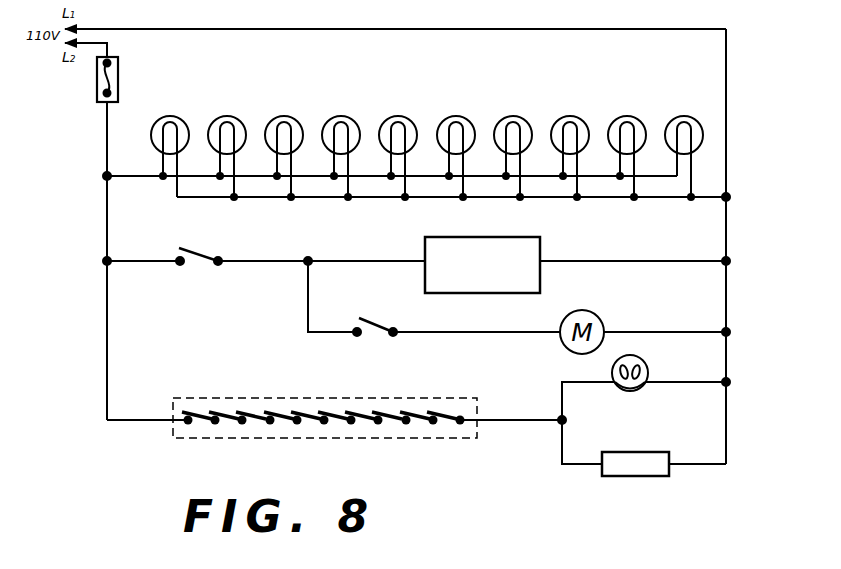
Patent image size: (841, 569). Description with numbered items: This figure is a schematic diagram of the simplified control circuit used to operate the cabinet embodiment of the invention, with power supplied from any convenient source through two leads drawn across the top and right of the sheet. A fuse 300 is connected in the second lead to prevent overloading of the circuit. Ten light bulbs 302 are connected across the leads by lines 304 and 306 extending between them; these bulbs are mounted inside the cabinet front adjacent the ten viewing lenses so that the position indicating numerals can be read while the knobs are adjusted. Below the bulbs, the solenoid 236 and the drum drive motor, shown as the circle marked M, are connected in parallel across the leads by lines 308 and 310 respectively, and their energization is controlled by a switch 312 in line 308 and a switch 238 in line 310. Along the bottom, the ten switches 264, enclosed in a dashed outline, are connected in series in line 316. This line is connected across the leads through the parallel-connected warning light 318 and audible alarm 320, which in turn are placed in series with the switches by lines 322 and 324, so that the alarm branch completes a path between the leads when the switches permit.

The fuse 300 is at (96, 88).
The light bulbs 302 is at (333, 118).
The line 304 is at (137, 177).
The line 306 is at (490, 198).
The line 308 is at (274, 264).
The line 310 is at (332, 336).
The switch 312 is at (211, 251).
The switch 238 is at (376, 317).
The solenoid 236 is at (541, 250).
The switches 264 is at (438, 416).
The line 316 is at (512, 423).
The warning light 318 is at (647, 365).
The audible alarm 320 is at (621, 478).
The line 322 is at (690, 384).
The line 324 is at (703, 467).